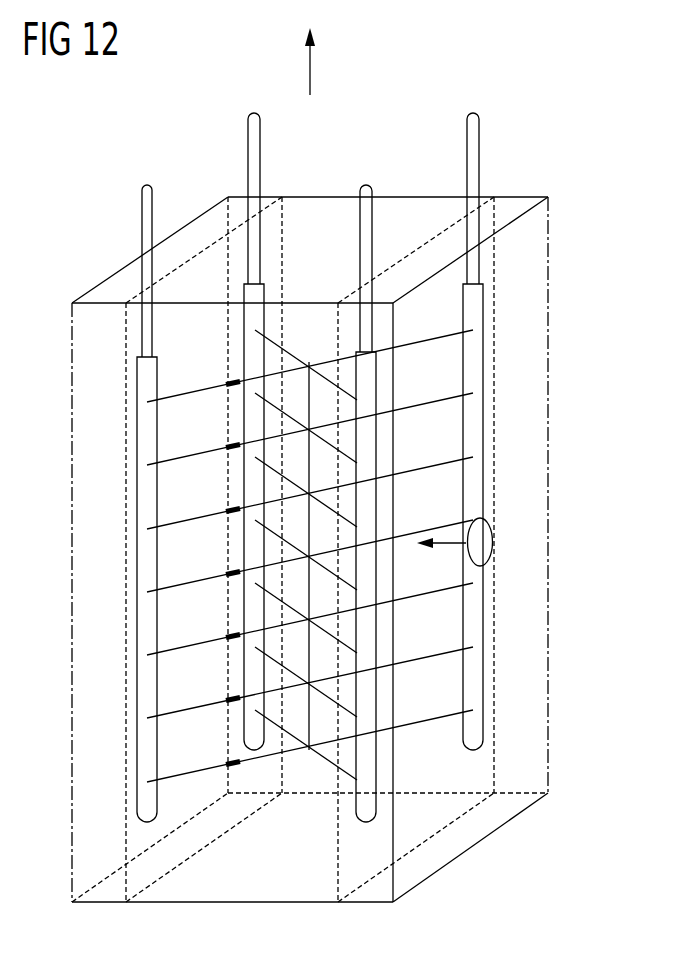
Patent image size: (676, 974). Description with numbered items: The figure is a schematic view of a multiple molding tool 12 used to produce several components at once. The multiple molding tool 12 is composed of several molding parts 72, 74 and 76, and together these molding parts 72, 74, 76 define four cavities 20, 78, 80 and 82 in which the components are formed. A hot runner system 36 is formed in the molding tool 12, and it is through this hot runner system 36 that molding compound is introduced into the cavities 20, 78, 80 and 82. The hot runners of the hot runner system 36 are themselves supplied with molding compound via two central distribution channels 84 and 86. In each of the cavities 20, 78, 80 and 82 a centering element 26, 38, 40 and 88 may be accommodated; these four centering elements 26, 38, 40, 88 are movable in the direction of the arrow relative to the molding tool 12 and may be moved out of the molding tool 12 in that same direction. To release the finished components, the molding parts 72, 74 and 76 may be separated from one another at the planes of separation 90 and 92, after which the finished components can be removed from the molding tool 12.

The multiple molding tool 12 is at (530, 119).
The cavity 20 is at (286, 525).
The centering element 26 is at (373, 196).
The hot runner system 36 is at (246, 556).
The centering element 38 is at (91, 503).
The centering element 40 is at (142, 431).
The molding part 72 is at (522, 198).
The molding part 74 is at (316, 204).
The molding part 76 is at (80, 383).
The cavity 78 is at (147, 572).
The cavity 80 is at (243, 348).
The cavity 82 is at (483, 690).
The central distribution channel 84 is at (494, 534).
The central distribution channel 86 is at (300, 712).
The centering element 88 is at (507, 429).
The plane of separation 90 is at (261, 568).
The plane of separation 92 is at (125, 833).